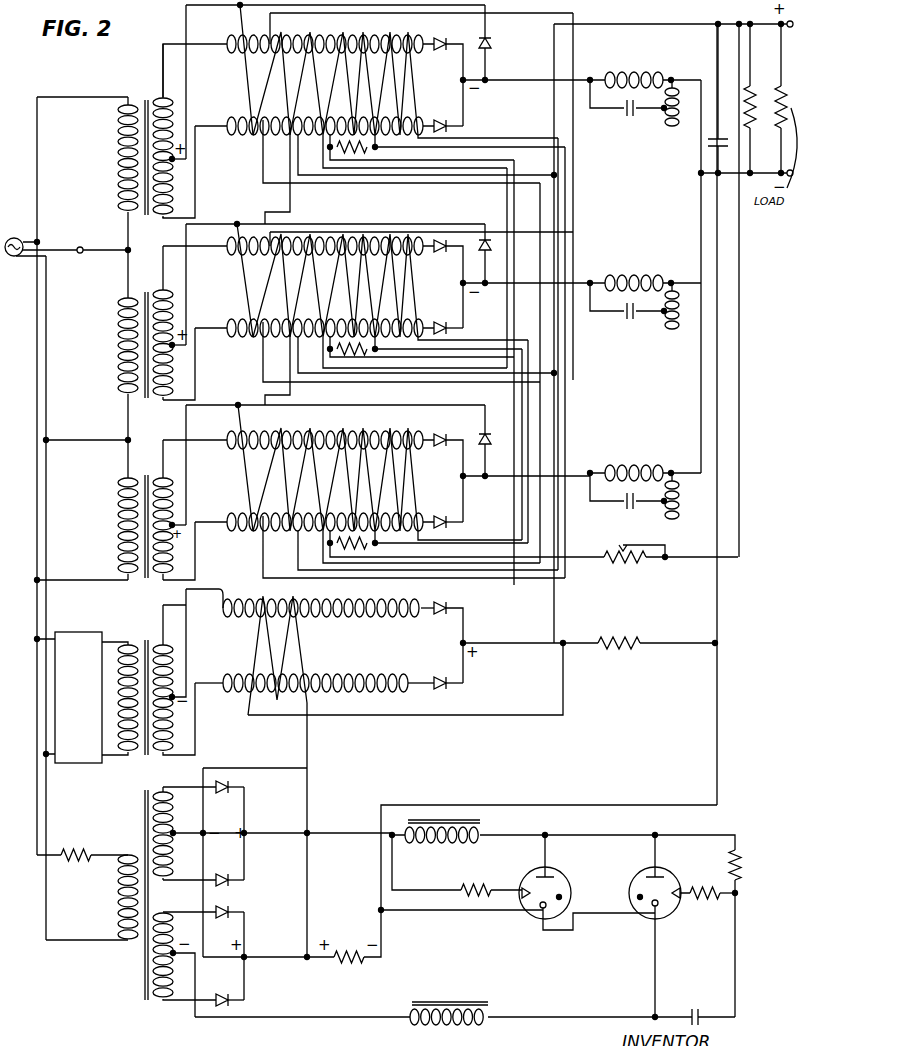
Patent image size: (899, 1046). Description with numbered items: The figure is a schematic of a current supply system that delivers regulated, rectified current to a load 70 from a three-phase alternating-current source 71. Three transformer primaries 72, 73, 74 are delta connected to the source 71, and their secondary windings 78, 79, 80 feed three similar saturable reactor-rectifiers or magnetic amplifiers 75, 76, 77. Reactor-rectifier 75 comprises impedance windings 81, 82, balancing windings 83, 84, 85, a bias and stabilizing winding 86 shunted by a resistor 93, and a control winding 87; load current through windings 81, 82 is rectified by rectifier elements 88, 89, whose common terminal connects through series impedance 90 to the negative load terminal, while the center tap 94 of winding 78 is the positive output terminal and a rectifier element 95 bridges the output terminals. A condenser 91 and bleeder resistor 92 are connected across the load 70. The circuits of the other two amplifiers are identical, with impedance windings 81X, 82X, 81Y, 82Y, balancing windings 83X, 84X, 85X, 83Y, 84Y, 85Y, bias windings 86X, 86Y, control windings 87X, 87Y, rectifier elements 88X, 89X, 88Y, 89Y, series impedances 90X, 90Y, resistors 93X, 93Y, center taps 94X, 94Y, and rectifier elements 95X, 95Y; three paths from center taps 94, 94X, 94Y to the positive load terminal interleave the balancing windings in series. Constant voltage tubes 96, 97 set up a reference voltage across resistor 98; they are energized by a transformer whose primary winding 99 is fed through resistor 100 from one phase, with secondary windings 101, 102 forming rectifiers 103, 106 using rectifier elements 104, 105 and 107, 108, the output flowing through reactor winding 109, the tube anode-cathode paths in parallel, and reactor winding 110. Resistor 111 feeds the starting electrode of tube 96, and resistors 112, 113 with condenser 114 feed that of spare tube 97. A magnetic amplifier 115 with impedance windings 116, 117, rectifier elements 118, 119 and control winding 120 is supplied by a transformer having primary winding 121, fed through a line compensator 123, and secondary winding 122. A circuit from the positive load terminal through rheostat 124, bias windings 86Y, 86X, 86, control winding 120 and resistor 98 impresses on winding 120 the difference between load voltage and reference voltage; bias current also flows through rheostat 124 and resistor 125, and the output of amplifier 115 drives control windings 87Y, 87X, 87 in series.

The load 70 is at (780, 86).
The three-phase alternating-current source 71 is at (11, 256).
The primary 72 is at (118, 157).
The primary 73 is at (118, 344).
The primary 74 is at (118, 519).
The saturable reactor-rectifier 75 is at (204, 83).
The reactor-rectifier 76 is at (204, 285).
The reactor-rectifier 77 is at (205, 471).
The secondary winding 78 is at (162, 97).
The secondary winding 79 is at (163, 288).
The secondary winding 80 is at (163, 478).
The impedance winding 81 is at (227, 43).
The impedance winding 82 is at (227, 131).
The balancing winding 83 is at (254, 90).
The balancing winding 84 is at (281, 88).
The balancing winding 85 is at (318, 88).
The bias and stabilizing winding 86 is at (366, 88).
The control winding 87 is at (411, 77).
The rectifier element 88 is at (444, 45).
The rectifier element 89 is at (443, 119).
The series impedance 90 is at (620, 104).
The condenser 91 is at (706, 146).
The bleeder resistor 92 is at (753, 130).
The resistor 93 is at (354, 158).
The center tap 94 is at (172, 159).
The rectifier element 95 is at (491, 41).
The impedance winding 81X is at (310, 241).
The impedance winding 82X is at (314, 336).
The balancing winding 83X is at (311, 285).
The balancing winding 84X is at (289, 279).
The balancing winding 85X is at (325, 279).
The bias and stabilizing winding 86X is at (375, 279).
The control winding 87X is at (433, 275).
The rectifier element 88X is at (457, 277).
The rectifier element 89X is at (459, 332).
The series impedance 90X is at (645, 306).
The resistor 93X is at (353, 368).
The center tap 94X is at (172, 345).
The rectifier element 95X is at (483, 224).
The impedance winding 81Y is at (310, 434).
The impedance winding 82Y is at (314, 529).
The balancing winding 83Y is at (313, 479).
The balancing winding 84Y is at (289, 467).
The balancing winding 85Y is at (325, 467).
The bias and stabilizing winding 86Y is at (375, 467).
The control winding 87Y is at (433, 467).
The rectifier element 88Y is at (452, 465).
The rectifier element 89Y is at (459, 525).
The series impedance 90Y is at (645, 496).
The resistor 93Y is at (370, 540).
The center tap 94Y is at (172, 525).
The rectifier element 95Y is at (498, 449).
The constant voltage tube 96 is at (553, 872).
The constant voltage tube 97 is at (660, 873).
The resistor 98 is at (345, 960).
The primary winding 99 is at (128, 942).
The resistor 100 is at (76, 852).
The secondary winding 101 is at (162, 788).
The secondary winding 102 is at (161, 1002).
The rectifier 103 is at (228, 809).
The rectifier element 104 is at (232, 787).
The rectifier element 105 is at (232, 884).
The rectifier 106 is at (218, 932).
The rectifier element 107 is at (232, 911).
The rectifier element 108 is at (232, 1001).
The reactor winding 109 is at (432, 840).
The reactor winding 110 is at (434, 1024).
The resistor 111 is at (461, 891).
The resistor 112 is at (741, 863).
The resistor 113 is at (696, 897).
The condenser 114 is at (697, 1009).
The magnetic amplifier 115 is at (357, 640).
The impedance winding 116 is at (228, 616).
The impedance winding 117 is at (224, 678).
The rectifier element 118 is at (443, 615).
The rectifier element 119 is at (444, 676).
The control winding 120 is at (300, 632).
The primary winding 121 is at (126, 640).
The secondary winding 122 is at (163, 642).
The line compensator 123 is at (66, 763).
The rheostat 124 is at (611, 561).
The resistor 125 is at (606, 648).